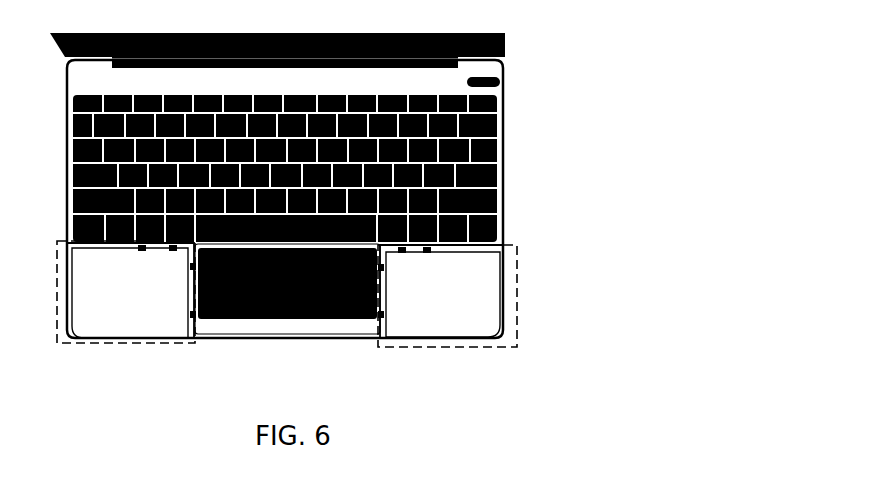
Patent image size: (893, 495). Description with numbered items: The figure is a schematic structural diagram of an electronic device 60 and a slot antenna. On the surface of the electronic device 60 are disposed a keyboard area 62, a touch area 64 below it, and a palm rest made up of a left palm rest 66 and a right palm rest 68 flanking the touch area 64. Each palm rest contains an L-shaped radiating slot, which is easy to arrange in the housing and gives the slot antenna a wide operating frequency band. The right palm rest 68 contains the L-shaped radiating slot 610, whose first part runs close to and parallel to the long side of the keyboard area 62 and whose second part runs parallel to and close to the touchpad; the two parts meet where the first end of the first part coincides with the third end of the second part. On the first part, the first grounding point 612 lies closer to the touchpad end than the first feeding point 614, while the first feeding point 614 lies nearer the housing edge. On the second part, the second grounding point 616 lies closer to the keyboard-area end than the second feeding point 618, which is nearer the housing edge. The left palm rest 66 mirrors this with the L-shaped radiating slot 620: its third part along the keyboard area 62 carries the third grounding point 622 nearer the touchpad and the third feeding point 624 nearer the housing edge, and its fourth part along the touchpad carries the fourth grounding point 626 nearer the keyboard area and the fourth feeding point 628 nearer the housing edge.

The electronic device 60 is at (70, 73).
The keyboard area 62 is at (497, 119).
The touch area 64 is at (287, 325).
The left palm rest 66 is at (83, 343).
The right palm rest 68 is at (520, 287).
The L-shaped radiating slot 610 is at (383, 330).
The first grounding point 612 is at (403, 252).
The first feeding point 614 is at (428, 252).
The second grounding point 616 is at (383, 268).
The second feeding point 618 is at (383, 316).
The L-shaped radiating slot 620 is at (190, 320).
The third grounding point 622 is at (172, 250).
The third feeding point 624 is at (140, 249).
The fourth grounding point 626 is at (190, 265).
The fourth feeding point 628 is at (190, 313).